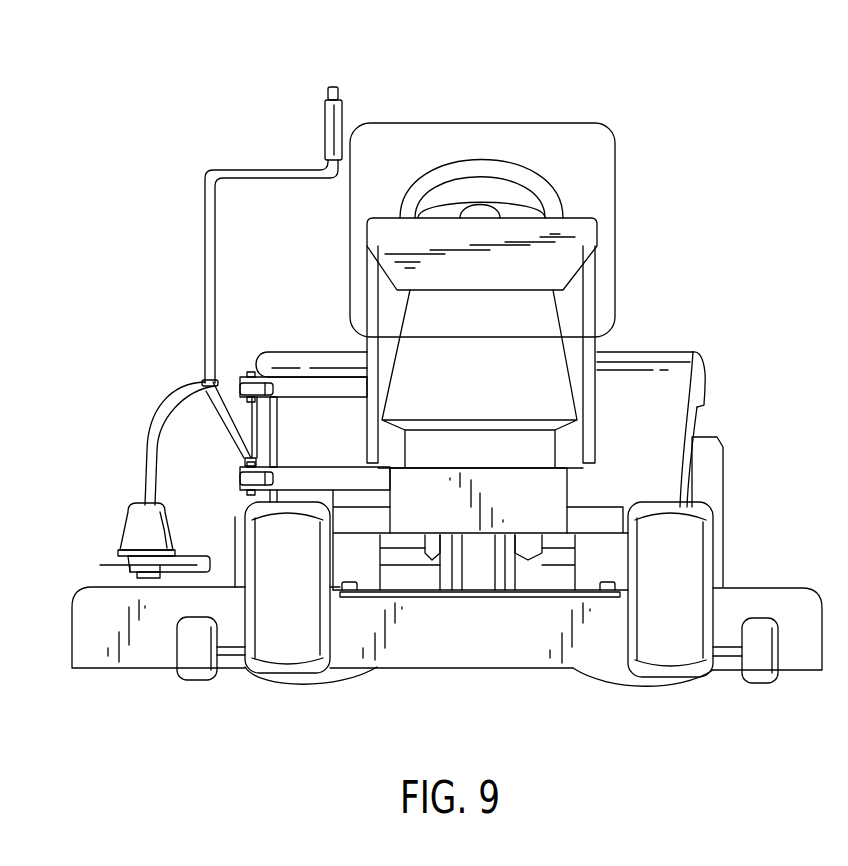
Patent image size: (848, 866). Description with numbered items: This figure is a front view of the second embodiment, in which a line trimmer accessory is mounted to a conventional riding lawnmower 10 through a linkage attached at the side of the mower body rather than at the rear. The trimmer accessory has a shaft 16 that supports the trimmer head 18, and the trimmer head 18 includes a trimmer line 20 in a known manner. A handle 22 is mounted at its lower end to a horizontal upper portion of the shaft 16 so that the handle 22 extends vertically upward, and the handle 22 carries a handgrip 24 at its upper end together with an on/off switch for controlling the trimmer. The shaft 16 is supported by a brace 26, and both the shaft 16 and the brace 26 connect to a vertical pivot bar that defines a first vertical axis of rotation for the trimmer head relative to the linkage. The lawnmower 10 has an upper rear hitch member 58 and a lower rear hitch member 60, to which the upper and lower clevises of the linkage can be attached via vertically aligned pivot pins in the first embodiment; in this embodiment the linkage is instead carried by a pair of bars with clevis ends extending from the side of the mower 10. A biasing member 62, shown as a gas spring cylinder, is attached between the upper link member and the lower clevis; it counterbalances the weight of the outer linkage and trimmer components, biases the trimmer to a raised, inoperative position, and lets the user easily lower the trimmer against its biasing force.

The lawnmower 10 is at (722, 64).
The shaft 16 is at (148, 441).
The trimmer head 18 is at (110, 533).
The trimmer line 20 is at (110, 568).
The handle 22 is at (205, 232).
The handgrip 24 is at (342, 114).
The brace 26 is at (224, 413).
The upper rear hitch member 58 is at (297, 352).
The lower rear hitch member 60 is at (305, 471).
The biasing member 62 is at (258, 418).